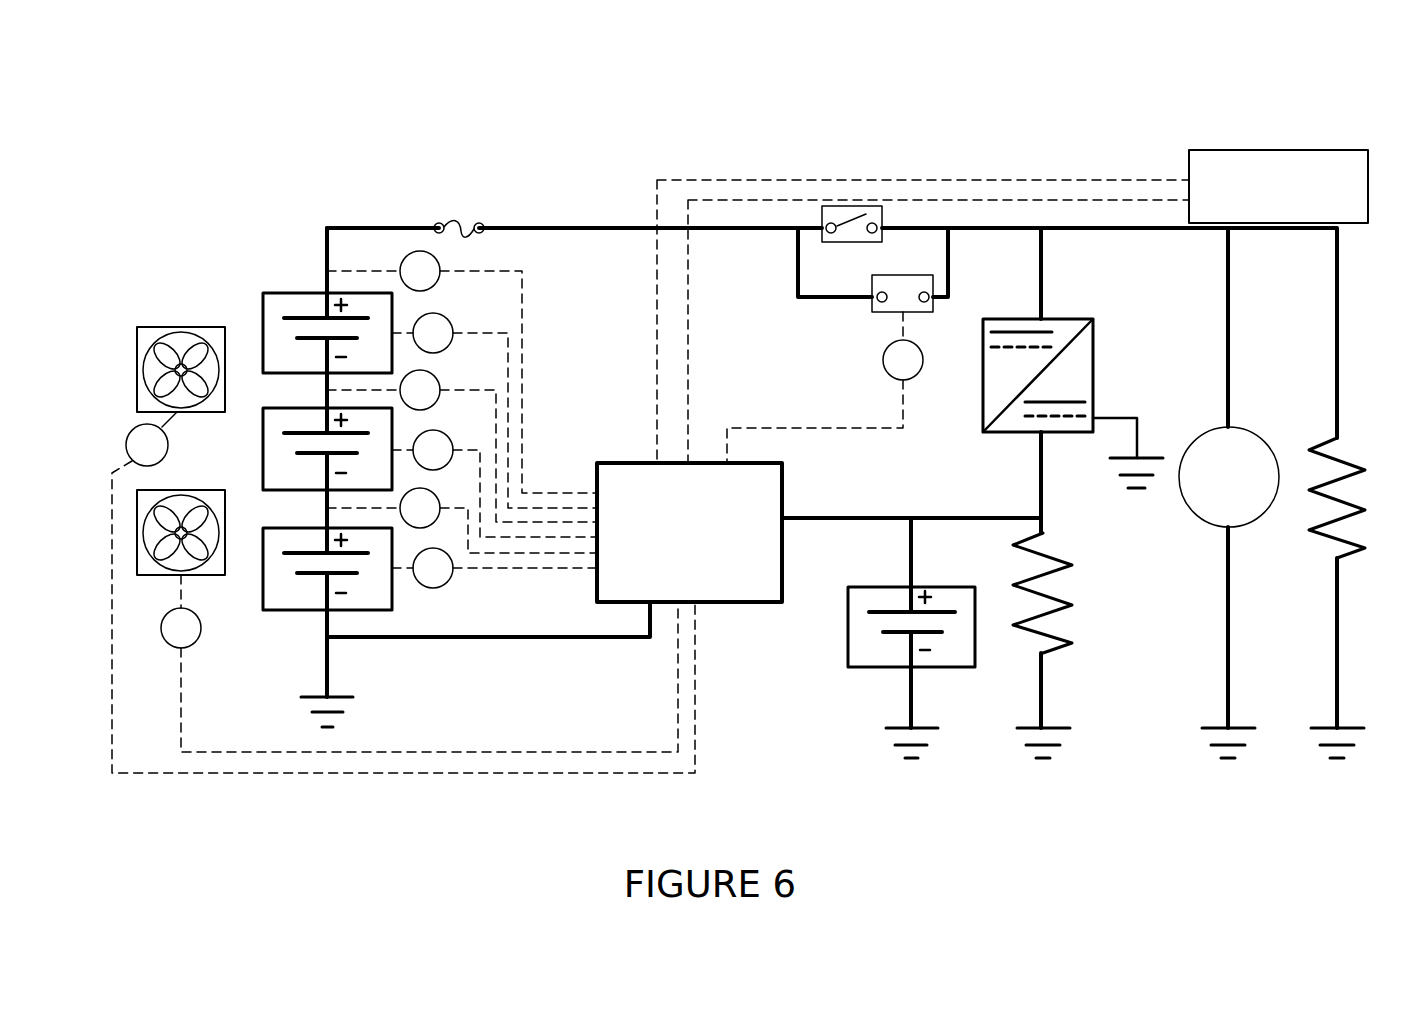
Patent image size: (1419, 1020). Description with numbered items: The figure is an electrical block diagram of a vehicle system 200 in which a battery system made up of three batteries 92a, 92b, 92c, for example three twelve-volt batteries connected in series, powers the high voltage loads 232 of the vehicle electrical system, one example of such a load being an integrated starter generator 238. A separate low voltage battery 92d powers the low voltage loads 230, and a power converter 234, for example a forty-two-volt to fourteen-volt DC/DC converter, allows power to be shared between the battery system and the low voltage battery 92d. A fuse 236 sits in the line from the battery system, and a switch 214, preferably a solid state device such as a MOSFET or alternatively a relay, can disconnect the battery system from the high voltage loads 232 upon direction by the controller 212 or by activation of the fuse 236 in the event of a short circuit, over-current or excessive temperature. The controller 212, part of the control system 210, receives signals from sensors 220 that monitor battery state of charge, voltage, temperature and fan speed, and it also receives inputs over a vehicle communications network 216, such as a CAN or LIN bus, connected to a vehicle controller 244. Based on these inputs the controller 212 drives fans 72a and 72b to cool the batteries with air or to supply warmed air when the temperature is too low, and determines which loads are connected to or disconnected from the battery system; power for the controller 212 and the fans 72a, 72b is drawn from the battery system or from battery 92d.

The fan 72a is at (160, 327).
The fan 72b is at (147, 575).
The battery 92a is at (283, 293).
The battery 92b is at (263, 447).
The battery 92c is at (283, 612).
The low voltage battery 92d is at (848, 657).
The sensors 220 is at (128, 428).
The fuse 236 is at (455, 222).
The controller 212 is at (712, 603).
The switch 214 is at (855, 206).
The control system 210 is at (781, 136).
The vehicle communications network 216 is at (1022, 180).
The vehicle controller 244 is at (1300, 150).
The vehicle system 200 is at (1199, 95).
The power converter 234 is at (1093, 362).
The integrated starter generator 238 is at (1252, 437).
The high voltage loads 232 is at (1350, 455).
The low voltage loads 230 is at (1060, 593).